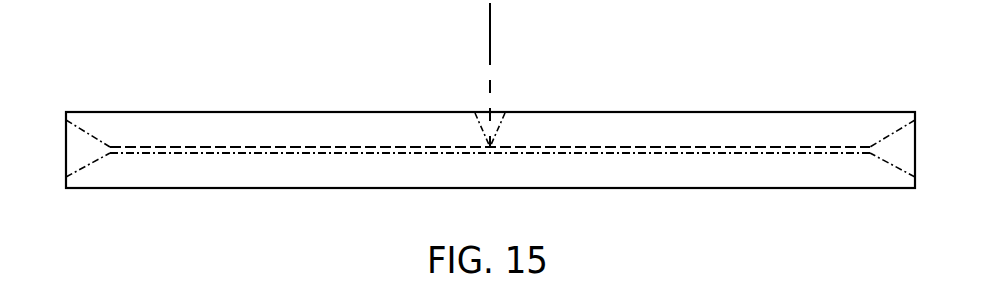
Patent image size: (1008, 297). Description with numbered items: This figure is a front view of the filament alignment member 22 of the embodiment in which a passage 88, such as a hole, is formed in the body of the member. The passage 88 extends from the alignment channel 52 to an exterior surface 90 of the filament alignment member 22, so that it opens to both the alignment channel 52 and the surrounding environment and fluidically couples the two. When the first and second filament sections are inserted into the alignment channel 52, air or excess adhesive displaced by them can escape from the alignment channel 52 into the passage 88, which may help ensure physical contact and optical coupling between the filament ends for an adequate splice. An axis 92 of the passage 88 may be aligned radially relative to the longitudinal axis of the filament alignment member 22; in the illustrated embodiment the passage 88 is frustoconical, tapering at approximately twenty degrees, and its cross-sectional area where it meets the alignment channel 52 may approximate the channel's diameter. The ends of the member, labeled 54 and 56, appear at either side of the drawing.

The filament alignment member 22 is at (310, 127).
The alignment channel 52 is at (168, 150).
The left end taper 54 is at (83, 150).
The right end taper 56 is at (900, 150).
The passage 88 is at (497, 118).
The exterior surface 90 is at (683, 130).
The axis 92 is at (489, 12).